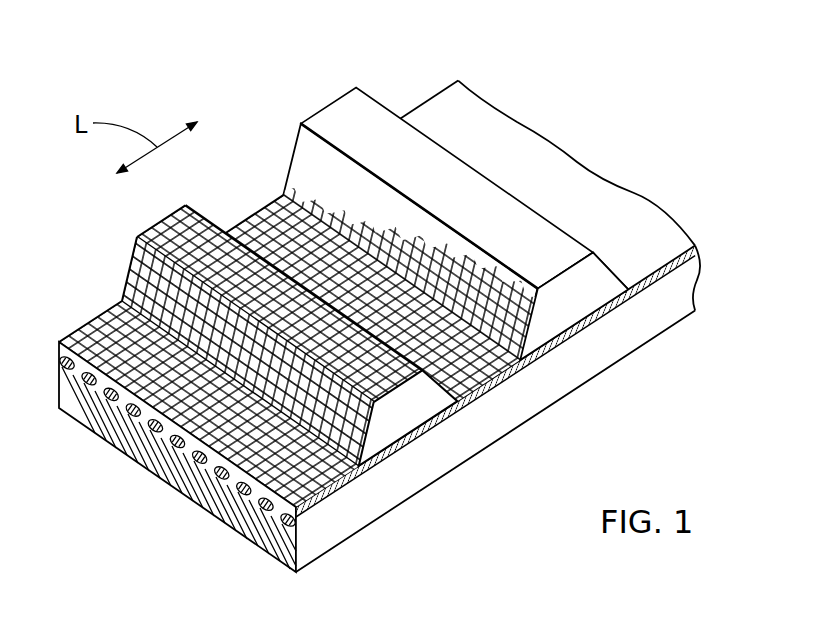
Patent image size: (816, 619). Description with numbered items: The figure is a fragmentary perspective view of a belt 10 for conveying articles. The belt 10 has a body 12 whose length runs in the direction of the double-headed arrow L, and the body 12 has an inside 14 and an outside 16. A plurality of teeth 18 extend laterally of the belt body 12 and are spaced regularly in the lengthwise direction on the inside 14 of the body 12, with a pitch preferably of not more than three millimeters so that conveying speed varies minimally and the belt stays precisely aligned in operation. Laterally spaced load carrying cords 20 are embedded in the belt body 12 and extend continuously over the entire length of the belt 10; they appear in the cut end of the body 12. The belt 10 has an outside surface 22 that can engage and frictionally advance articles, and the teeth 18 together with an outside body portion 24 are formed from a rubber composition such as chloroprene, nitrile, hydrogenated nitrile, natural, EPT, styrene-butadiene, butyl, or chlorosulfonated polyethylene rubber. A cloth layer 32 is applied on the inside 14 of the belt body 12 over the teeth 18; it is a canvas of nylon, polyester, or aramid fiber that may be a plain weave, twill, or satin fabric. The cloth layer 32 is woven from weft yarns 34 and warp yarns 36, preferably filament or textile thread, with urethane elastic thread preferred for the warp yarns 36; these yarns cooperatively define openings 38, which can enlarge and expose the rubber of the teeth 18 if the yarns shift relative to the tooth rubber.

The belt 10 is at (396, 297).
The body 12 is at (704, 277).
The inside 14 is at (362, 125).
The outside 16 is at (532, 425).
The teeth 18 is at (585, 307).
The load carrying cords 20 is at (245, 478).
The outside surface 22 is at (580, 393).
The outside body portion 24 is at (459, 455).
The cloth layer 32 is at (600, 254).
The weft yarns 34 is at (435, 277).
The warp yarns 36 is at (287, 255).
The openings 38 is at (147, 257).